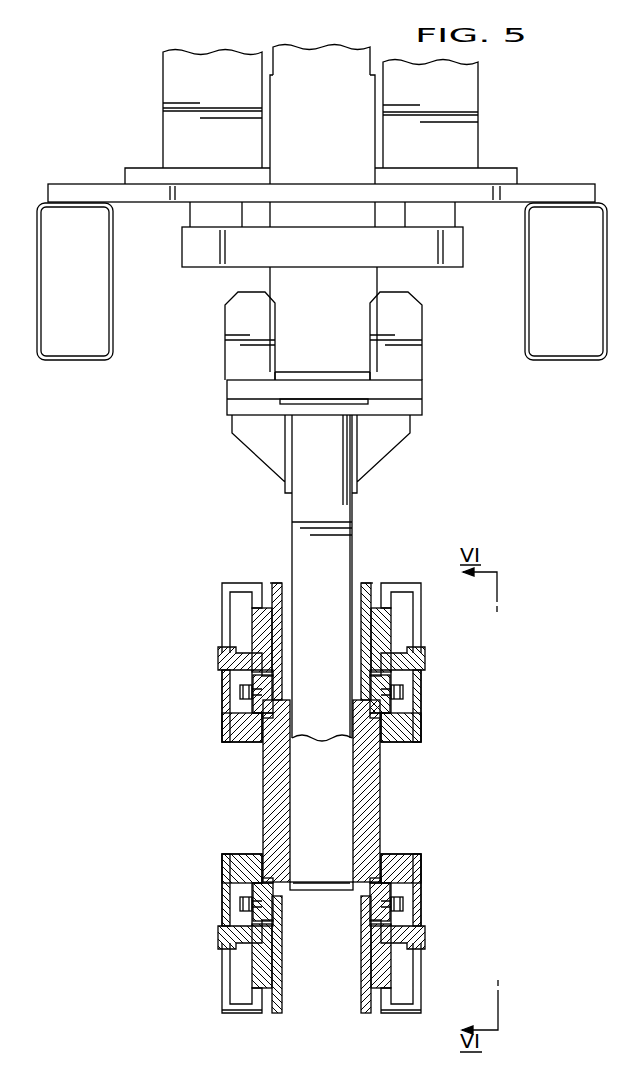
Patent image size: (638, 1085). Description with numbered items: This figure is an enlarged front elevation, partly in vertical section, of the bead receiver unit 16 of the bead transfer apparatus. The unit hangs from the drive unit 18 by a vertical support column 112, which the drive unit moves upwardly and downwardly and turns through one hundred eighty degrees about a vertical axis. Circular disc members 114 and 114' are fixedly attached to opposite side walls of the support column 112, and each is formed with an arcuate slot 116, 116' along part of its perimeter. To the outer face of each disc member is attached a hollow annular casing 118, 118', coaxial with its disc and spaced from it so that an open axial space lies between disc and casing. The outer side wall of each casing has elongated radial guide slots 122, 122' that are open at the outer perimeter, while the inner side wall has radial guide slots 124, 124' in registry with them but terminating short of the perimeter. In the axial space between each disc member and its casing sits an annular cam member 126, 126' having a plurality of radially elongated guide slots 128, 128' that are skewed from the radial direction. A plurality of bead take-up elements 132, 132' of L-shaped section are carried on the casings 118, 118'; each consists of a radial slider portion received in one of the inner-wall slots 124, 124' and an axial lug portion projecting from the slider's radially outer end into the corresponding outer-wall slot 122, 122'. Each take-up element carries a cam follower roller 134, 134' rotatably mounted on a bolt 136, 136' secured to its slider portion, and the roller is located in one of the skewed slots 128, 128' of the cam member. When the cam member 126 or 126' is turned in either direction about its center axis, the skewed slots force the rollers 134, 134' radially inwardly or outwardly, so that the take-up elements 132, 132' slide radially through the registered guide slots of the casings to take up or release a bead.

The bead receiver unit 16 is at (432, 488).
The drive unit 18 is at (137, 118).
The vertical support column 112 is at (355, 506).
The circular disc member 114 is at (384, 566).
The circular disc member 114' is at (260, 566).
The arcuate slot 116 is at (339, 798).
The arcuate slot 116' is at (305, 798).
The annular casing 118 is at (404, 1029).
The annular casing 118' is at (238, 1028).
The radial guide slot 122 is at (424, 794).
The radial guide slot 122' is at (221, 788).
The radial guide slot 124 is at (415, 798).
The radial guide slot 124' is at (230, 797).
The annular cam member 126 is at (372, 870).
The annular cam member 126' is at (278, 870).
The guide slot 128 is at (344, 794).
The guide slot 128' is at (300, 796).
The bead take-up element 132 is at (430, 798).
The bead take-up element 132' is at (216, 798).
The cam follower roller 134 is at (349, 799).
The cam follower roller 134' is at (295, 798).
The bolt 136 is at (422, 798).
The bolt 136' is at (221, 798).